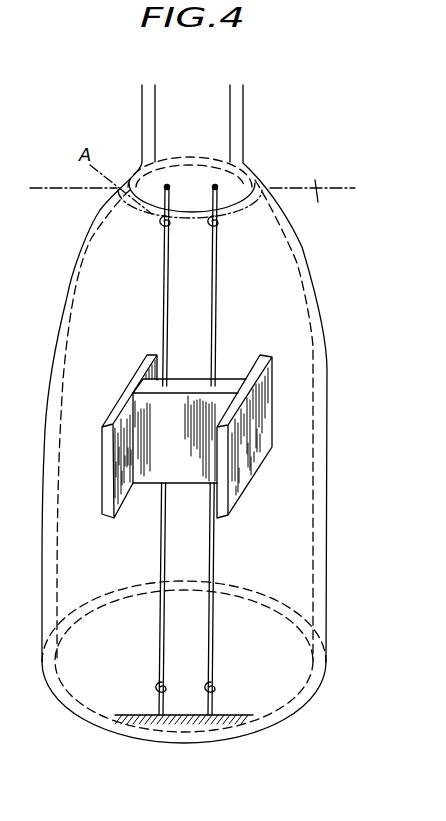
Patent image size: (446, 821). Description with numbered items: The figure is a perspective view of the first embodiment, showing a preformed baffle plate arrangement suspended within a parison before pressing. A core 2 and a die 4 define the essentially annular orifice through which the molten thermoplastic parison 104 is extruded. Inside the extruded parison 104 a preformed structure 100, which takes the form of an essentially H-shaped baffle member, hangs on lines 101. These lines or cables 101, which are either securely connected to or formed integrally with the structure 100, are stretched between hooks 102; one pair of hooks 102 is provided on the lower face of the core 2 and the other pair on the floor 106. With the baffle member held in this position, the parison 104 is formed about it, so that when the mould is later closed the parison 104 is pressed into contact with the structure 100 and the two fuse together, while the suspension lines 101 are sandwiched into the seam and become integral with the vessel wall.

The core 2 is at (210, 143).
The die 4 is at (192, 201).
The preformed structure 100 is at (245, 468).
The lines 101 is at (166, 292).
The hooks 102 is at (208, 226).
The parison 104 is at (312, 325).
The floor 106 is at (230, 713).